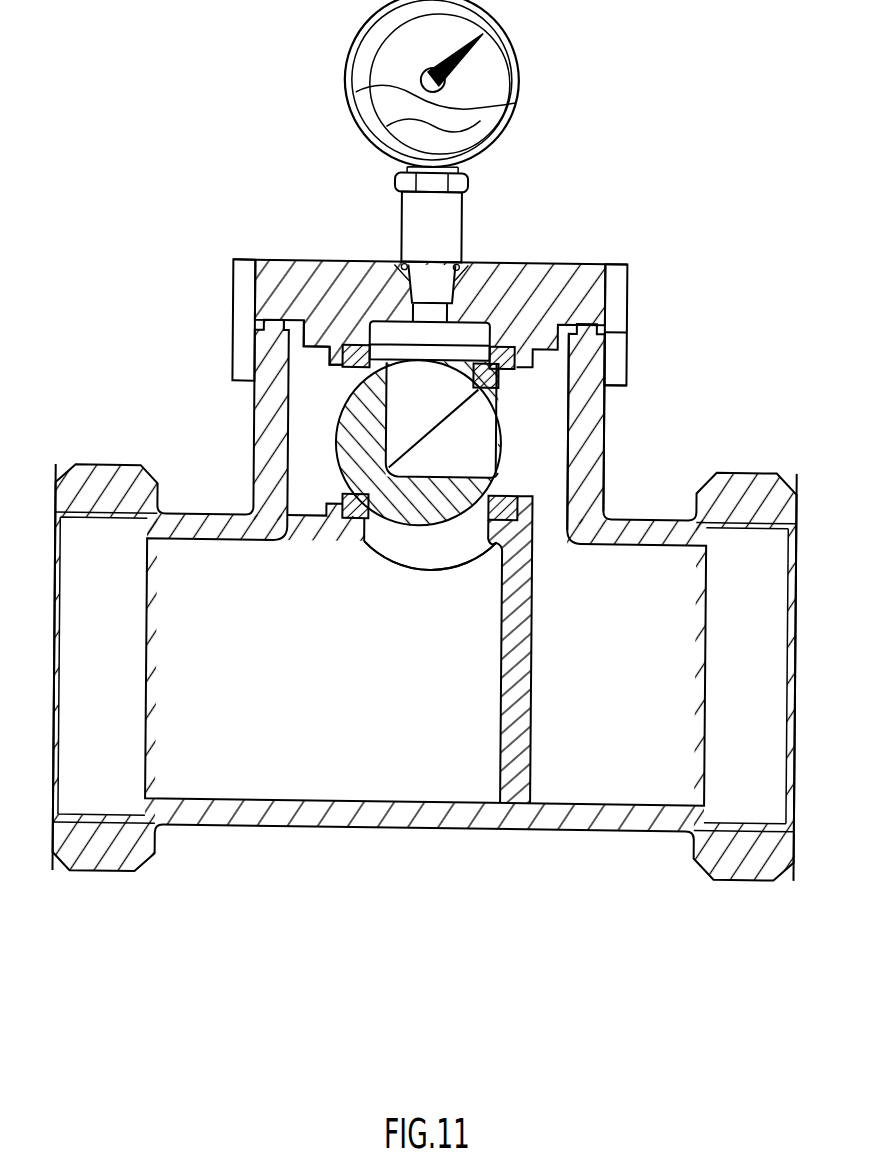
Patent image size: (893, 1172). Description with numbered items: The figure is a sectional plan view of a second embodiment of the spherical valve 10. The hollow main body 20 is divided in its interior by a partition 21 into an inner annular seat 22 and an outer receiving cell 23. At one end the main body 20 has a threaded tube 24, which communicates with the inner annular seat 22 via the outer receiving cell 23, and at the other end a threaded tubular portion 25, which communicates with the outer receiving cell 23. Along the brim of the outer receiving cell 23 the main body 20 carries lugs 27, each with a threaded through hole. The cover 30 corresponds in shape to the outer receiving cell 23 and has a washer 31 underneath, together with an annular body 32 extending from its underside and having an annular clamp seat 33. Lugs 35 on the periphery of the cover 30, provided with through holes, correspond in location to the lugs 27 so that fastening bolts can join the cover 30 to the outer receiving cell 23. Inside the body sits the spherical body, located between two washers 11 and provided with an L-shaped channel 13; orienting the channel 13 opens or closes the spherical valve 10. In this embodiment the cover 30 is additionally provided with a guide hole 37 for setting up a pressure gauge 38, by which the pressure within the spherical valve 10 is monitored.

The spherical valve 10 is at (649, 209).
The washers 11 is at (515, 362).
The L-shaped channel 13 is at (395, 436).
The main body 20 is at (290, 823).
The partition 21 is at (500, 637).
The inner annular seat 22 is at (405, 548).
The outer receiving cell 23 is at (555, 430).
The threaded tube 24 is at (100, 800).
The threaded tubular portion 25 is at (737, 818).
The lugs 27 is at (620, 347).
The cover 30 is at (328, 270).
The washer 31 is at (262, 322).
The annular body 32 is at (306, 338).
The annular clamp seat 33 is at (330, 364).
The lugs 35 is at (620, 282).
The guide hole 37 is at (400, 272).
The pressure gauge 38 is at (363, 55).